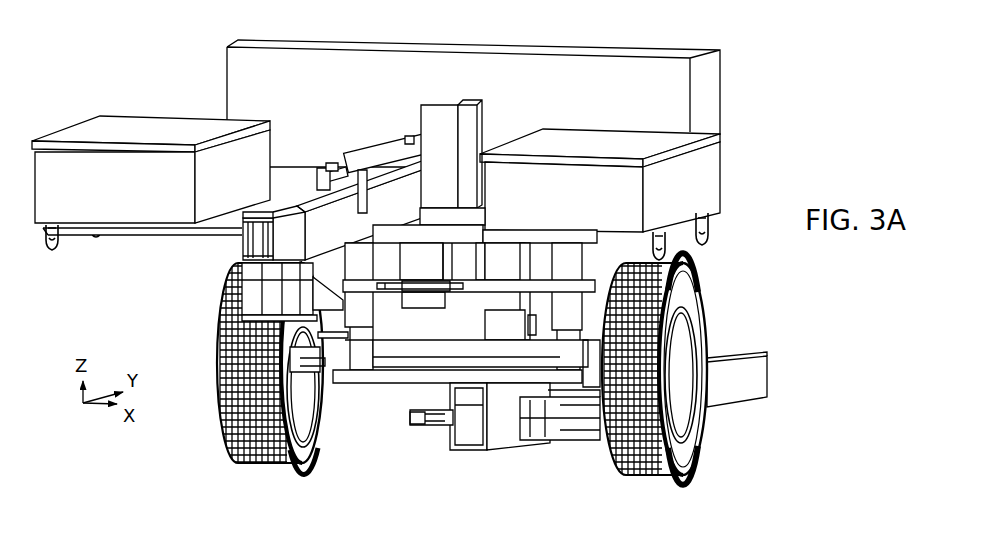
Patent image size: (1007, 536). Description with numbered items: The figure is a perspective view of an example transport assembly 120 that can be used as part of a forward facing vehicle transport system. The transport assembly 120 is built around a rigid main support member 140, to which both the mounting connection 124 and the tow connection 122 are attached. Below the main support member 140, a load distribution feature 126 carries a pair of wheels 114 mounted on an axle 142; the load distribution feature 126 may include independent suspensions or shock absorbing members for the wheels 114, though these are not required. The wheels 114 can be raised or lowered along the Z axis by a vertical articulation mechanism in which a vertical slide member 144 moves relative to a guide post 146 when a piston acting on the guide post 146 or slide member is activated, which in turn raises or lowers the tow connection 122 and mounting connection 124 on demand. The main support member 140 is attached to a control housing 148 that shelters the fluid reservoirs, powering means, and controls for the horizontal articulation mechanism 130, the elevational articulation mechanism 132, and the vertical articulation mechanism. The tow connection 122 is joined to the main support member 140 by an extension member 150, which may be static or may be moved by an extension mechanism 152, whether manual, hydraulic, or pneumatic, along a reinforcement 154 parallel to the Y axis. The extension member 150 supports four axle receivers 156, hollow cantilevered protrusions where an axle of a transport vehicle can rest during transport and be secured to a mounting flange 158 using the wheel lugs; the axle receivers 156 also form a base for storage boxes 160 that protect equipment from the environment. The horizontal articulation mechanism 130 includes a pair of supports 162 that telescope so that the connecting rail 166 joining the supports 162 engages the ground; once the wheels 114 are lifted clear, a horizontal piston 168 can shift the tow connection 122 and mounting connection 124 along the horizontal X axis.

The wheels 114 is at (242, 463).
The transport assembly 120 is at (90, 31).
The tow connection 122 is at (180, 275).
The mounting connection 124 is at (767, 357).
The load distribution feature 126 is at (713, 440).
The horizontal articulation mechanism 130 is at (413, 395).
The elevational articulation mechanism 132 is at (416, 254).
The main support member 140 is at (492, 451).
The axle 142 is at (395, 356).
The vertical slide member 144 is at (505, 240).
The guide post 146 is at (512, 320).
The control housing 148 is at (285, 87).
The extension member 150 is at (345, 240).
The extension mechanism 152 is at (370, 150).
The reinforcement 154 is at (236, 248).
The axle receivers 156 is at (183, 238).
The mounting flange 158 is at (48, 252).
The storage boxes 160 is at (130, 200).
The supports 162 is at (572, 262).
The connecting rail 166 is at (345, 382).
The horizontal piston 168 is at (390, 296).